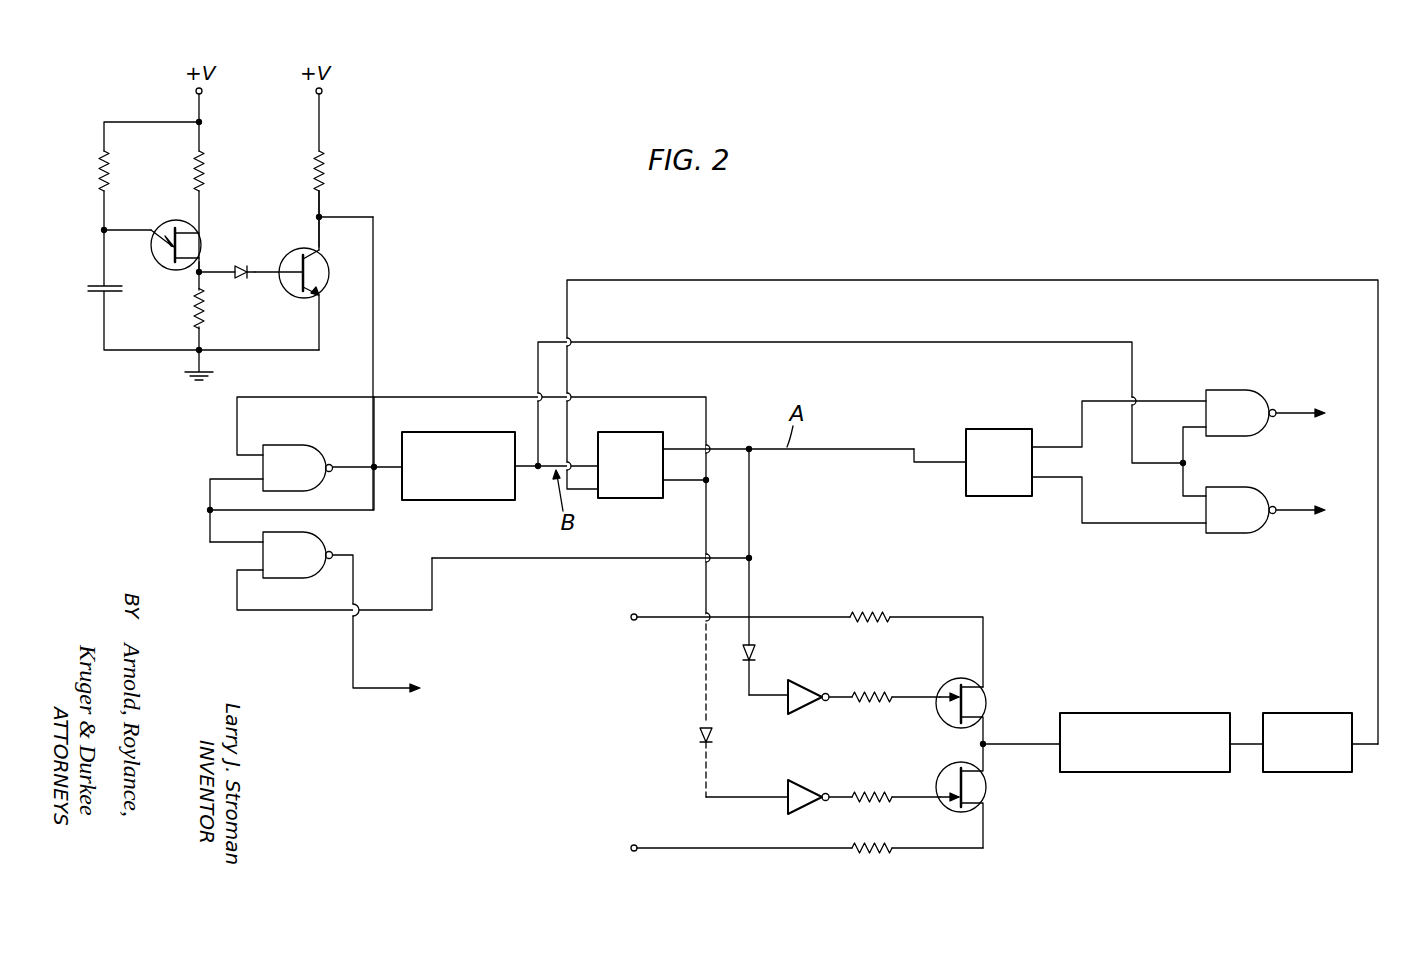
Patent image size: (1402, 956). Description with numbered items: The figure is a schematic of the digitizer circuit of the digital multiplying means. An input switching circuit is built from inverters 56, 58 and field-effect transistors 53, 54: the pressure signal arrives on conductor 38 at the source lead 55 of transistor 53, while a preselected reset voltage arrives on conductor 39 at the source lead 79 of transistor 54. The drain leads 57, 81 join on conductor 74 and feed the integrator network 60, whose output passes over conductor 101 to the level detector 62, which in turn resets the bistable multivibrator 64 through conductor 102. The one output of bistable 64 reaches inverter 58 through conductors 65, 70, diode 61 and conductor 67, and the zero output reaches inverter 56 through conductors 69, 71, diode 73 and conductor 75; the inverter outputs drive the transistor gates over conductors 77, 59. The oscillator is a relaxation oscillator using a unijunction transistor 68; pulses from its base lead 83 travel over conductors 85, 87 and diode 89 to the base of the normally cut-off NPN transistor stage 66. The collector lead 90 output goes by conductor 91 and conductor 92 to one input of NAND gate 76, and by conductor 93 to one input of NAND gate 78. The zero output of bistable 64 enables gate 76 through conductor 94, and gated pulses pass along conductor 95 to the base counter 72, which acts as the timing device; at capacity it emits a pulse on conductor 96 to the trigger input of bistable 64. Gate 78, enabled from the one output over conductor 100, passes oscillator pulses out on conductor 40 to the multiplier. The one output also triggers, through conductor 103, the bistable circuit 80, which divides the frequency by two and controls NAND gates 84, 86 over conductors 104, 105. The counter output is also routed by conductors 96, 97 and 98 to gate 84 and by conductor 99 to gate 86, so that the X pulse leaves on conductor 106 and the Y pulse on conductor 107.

The conductor 38 is at (673, 616).
The conductor 39 is at (760, 850).
The conductor 40 is at (378, 690).
The field-effect transistor 53 is at (992, 697).
The field-effect transistor 54 is at (1005, 788).
The source lead 55 is at (984, 680).
The inverter circuit 56 is at (808, 780).
The drain lead 57 is at (985, 734).
The inverter circuit 58 is at (810, 680).
The conductor 59 is at (904, 690).
The integrator network 60 is at (1148, 713).
The diode 61 is at (762, 656).
The level detector 62 is at (1302, 713).
The bistable multivibrator 64 is at (623, 500).
The conductor 65 is at (728, 447).
The NPN transistor stage 66 is at (333, 282).
The conductor 67 is at (748, 698).
The unijunction transistor 68 is at (166, 208).
The conductor 69 is at (687, 484).
The conductor 70 is at (752, 586).
The conductor 71 is at (703, 683).
The base counter 72 is at (448, 500).
The diode 73 is at (695, 746).
The conductor 74 is at (1036, 742).
The conductor 75 is at (740, 797).
The NAND gate 76 is at (300, 445).
The conductor 77 is at (910, 790).
The NAND gate 78 is at (328, 538).
The source lead 79 is at (986, 830).
The bistable circuit 80 is at (998, 428).
The drain lead 81 is at (986, 752).
The base lead 83 is at (195, 270).
The NAND gate 84 is at (1235, 390).
The conductor 85 is at (224, 270).
The NAND gate 86 is at (1240, 487).
The conductor 87 is at (263, 278).
The diode 89 is at (238, 282).
The collector lead 90 is at (316, 236).
The conductor 91 is at (378, 292).
The conductor 92 is at (210, 484).
The conductor 93 is at (210, 540).
The conductor 94 is at (442, 396).
The conductor 95 is at (350, 465).
The conductor 96 is at (538, 470).
The conductor 97 is at (772, 342).
The conductor 98 is at (1181, 443).
The conductor 99 is at (1181, 480).
The conductor 100 is at (497, 560).
The conductor 101 is at (1250, 746).
The conductor 102 is at (863, 279).
The conductor 103 is at (840, 447).
The conductor 104 is at (1080, 410).
The conductor 105 is at (1080, 510).
The conductor 106 is at (1293, 408).
The conductor 107 is at (1305, 515).